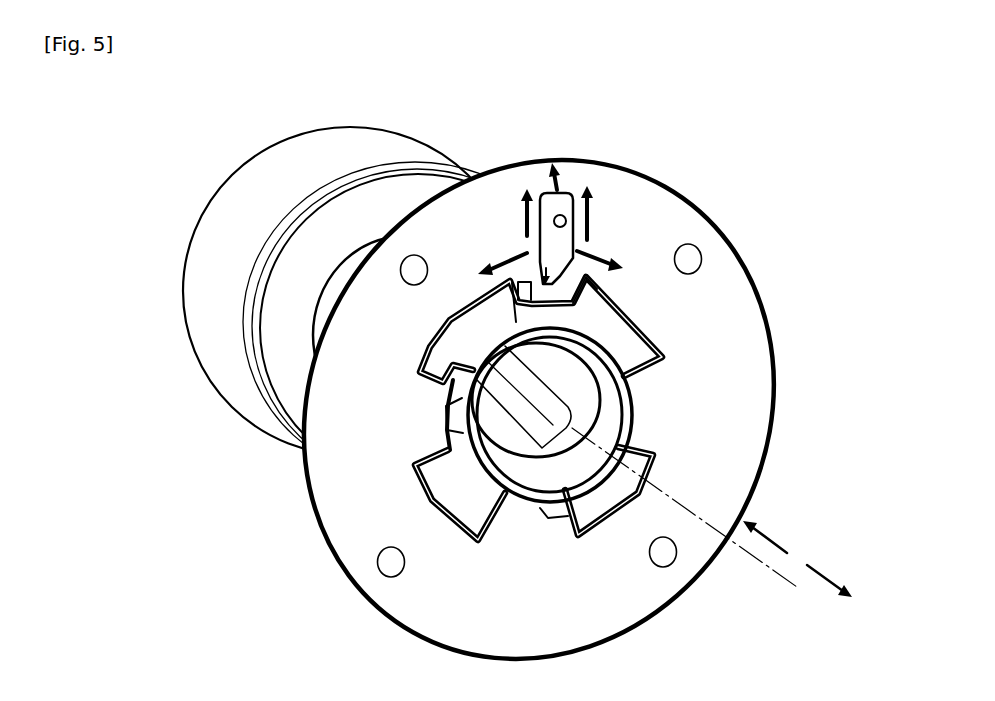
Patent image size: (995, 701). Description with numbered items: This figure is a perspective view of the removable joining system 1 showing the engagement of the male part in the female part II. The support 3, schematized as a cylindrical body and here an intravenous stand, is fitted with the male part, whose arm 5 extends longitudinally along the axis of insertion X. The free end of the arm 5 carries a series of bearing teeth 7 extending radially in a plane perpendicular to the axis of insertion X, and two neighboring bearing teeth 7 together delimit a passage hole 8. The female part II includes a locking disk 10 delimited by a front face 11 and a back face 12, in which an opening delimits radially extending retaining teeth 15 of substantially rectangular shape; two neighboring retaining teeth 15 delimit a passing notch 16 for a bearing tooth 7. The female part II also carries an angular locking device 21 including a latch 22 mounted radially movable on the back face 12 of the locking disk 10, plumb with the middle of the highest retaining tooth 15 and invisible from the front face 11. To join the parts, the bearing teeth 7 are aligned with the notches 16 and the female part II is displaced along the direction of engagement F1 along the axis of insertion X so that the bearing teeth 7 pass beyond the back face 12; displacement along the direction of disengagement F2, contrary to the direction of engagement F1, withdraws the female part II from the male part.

The removable joining system 1 is at (289, 571).
The support 3 is at (292, 138).
The arm 5 is at (543, 480).
The bearing teeth 7 is at (633, 328).
The passage hole 8 is at (457, 383).
The locking disk 10 is at (743, 380).
The front face 11 is at (509, 164).
The back face 12 is at (662, 210).
The retaining teeth 15 is at (527, 297).
The passing notch 16 is at (595, 292).
The angular locking device 21 is at (578, 181).
The latch 22 is at (564, 228).
The female part II is at (758, 245).
The axis of insertion X is at (780, 582).
The direction of engagement F1 is at (773, 535).
The direction of disengagement F2 is at (829, 572).